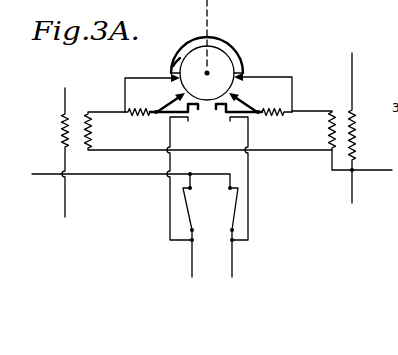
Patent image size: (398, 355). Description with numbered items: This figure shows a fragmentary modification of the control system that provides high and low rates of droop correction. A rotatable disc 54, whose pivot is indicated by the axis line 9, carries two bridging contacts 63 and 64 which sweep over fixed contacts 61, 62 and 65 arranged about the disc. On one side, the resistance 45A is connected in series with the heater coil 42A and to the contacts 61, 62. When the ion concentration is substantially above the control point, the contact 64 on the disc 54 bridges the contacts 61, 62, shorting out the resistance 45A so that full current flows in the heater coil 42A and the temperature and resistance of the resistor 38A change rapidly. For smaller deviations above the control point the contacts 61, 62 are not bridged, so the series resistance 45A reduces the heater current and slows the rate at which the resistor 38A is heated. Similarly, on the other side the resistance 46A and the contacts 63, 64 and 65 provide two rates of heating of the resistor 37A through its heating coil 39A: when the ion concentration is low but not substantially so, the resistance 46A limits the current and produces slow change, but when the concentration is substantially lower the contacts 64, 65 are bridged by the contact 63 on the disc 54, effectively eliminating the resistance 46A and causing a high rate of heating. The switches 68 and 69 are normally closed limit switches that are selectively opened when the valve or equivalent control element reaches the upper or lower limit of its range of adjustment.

The pointer shaft axis 9 is at (209, 24).
The disc 54 is at (240, 53).
The contact 63 is at (176, 63).
The contact 61 is at (123, 78).
The contact 65 is at (268, 76).
The contact 62 is at (168, 102).
The contact 64 is at (253, 103).
The resistance 45A is at (137, 116).
The resistance 46A is at (270, 116).
The heater coil 42A is at (91, 131).
The resistor 38A is at (60, 130).
The resistor 37A is at (357, 125).
The heating coil 39A is at (328, 130).
The limit switch 68 is at (187, 212).
The limit switch 69 is at (238, 211).